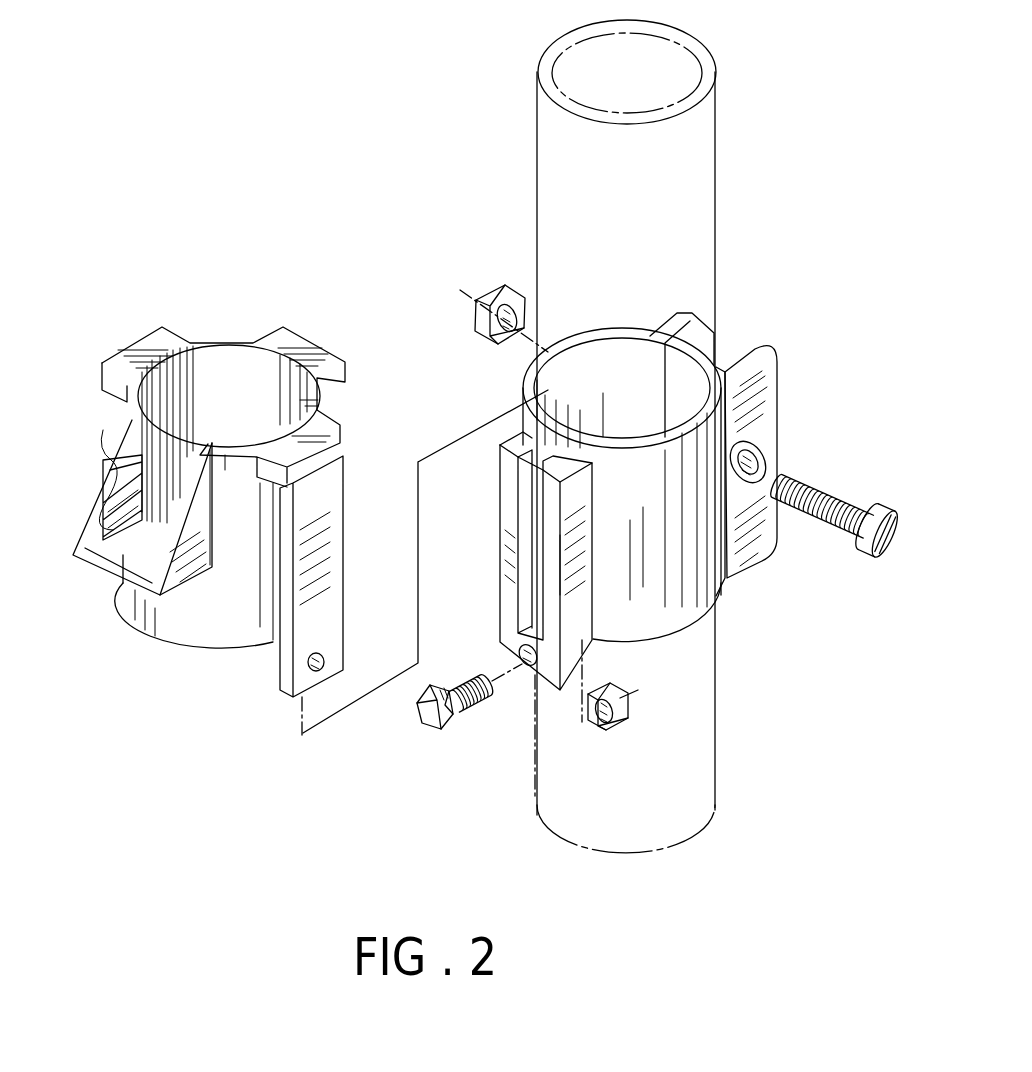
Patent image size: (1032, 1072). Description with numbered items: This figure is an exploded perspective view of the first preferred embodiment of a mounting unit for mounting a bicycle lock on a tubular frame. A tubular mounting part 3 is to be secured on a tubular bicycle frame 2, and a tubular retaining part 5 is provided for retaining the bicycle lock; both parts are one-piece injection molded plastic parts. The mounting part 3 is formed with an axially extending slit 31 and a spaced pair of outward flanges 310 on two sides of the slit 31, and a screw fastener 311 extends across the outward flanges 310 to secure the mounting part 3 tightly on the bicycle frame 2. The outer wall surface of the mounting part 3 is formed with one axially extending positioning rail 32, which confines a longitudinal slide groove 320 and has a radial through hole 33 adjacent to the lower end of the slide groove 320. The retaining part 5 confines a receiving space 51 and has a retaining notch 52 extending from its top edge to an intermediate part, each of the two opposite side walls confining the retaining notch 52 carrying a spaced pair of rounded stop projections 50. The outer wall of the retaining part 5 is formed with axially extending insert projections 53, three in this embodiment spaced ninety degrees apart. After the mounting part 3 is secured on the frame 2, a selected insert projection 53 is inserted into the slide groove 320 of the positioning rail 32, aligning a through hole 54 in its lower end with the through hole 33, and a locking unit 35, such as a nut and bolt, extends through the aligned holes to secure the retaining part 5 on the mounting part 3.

The tubular bicycle frame 2 is at (536, 193).
The tubular mounting part 3 is at (668, 492).
The axially extending slit 31 is at (718, 338).
The outward flanges 310 is at (752, 552).
The screw fastener 311 is at (828, 472).
The positioning rail 32 is at (513, 561).
The slide groove 320 is at (502, 470).
The radial through hole 33 is at (520, 651).
The locking unit 35 is at (464, 718).
The tubular retaining part 5 is at (223, 507).
The rounded stop projections 50 is at (104, 476).
The receiving space 51 is at (224, 366).
The retaining notch 52 is at (130, 556).
The insert projection 53 is at (338, 484).
The through hole 54 is at (336, 668).